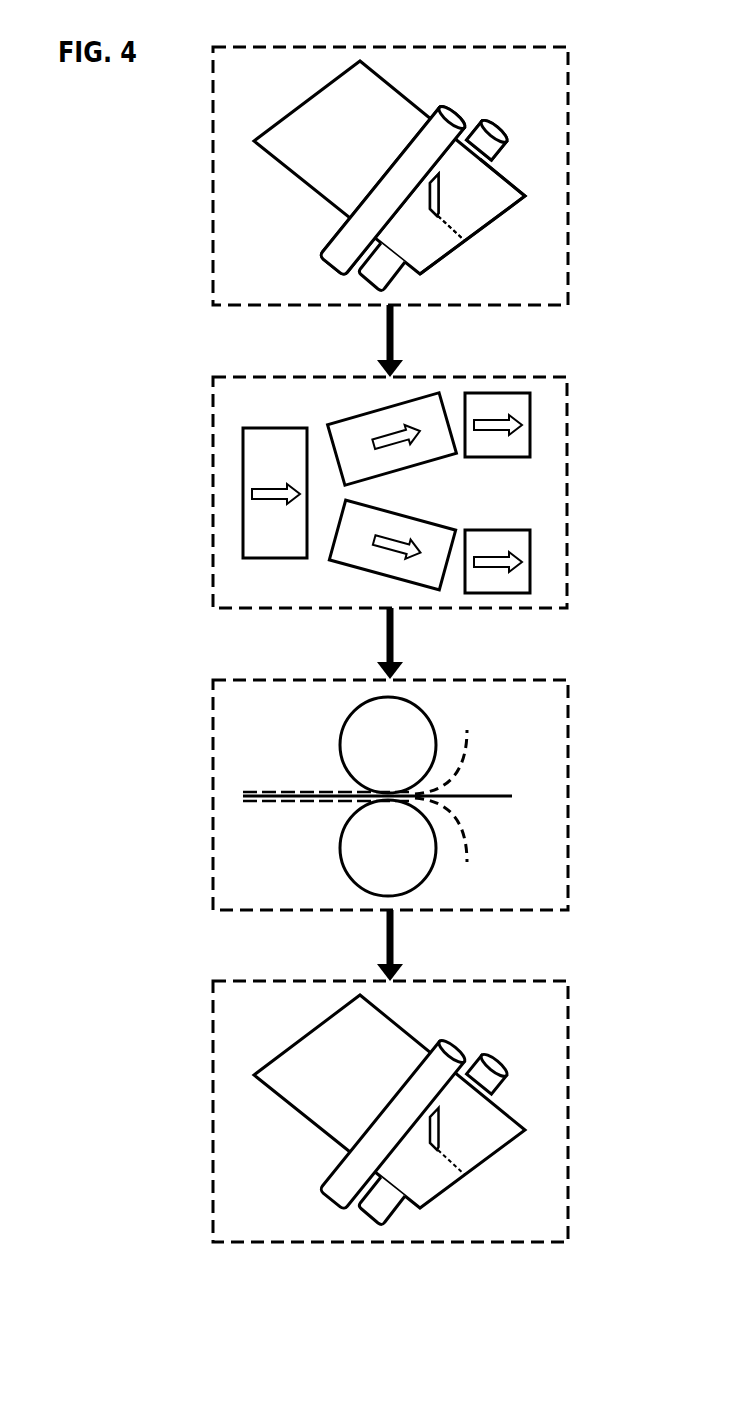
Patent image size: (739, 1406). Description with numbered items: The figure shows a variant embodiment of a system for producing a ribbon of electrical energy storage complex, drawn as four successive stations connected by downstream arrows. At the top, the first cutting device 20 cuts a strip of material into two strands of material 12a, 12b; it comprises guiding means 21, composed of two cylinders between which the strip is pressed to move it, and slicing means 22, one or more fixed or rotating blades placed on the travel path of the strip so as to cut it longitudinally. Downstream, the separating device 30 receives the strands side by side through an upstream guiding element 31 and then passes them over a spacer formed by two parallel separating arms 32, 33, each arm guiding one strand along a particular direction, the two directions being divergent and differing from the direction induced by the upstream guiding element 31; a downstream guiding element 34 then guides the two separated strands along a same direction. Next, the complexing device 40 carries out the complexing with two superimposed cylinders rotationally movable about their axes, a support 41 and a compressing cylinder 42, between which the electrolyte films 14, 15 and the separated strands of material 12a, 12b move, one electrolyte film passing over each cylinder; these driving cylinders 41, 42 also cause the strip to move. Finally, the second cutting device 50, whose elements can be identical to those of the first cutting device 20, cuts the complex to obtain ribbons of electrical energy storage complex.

The strand of material 12a is at (503, 197).
The strand of material 12b is at (427, 250).
The electrolyte film 14 is at (467, 750).
The electrolyte film 15 is at (467, 840).
The first cutting device 20 is at (568, 177).
The guiding means 21 is at (433, 153).
The slicing means 22 is at (433, 203).
The separating device 30 is at (568, 493).
The upstream guiding element 31 is at (255, 455).
The separating arm 32 is at (362, 427).
The separating arm 33 is at (363, 560).
The downstream guiding element 34 is at (552, 510).
The complexing device 40 is at (568, 797).
The support 41 is at (360, 848).
The compressing cylinder 42 is at (360, 745).
The second cutting device 50 is at (568, 1112).